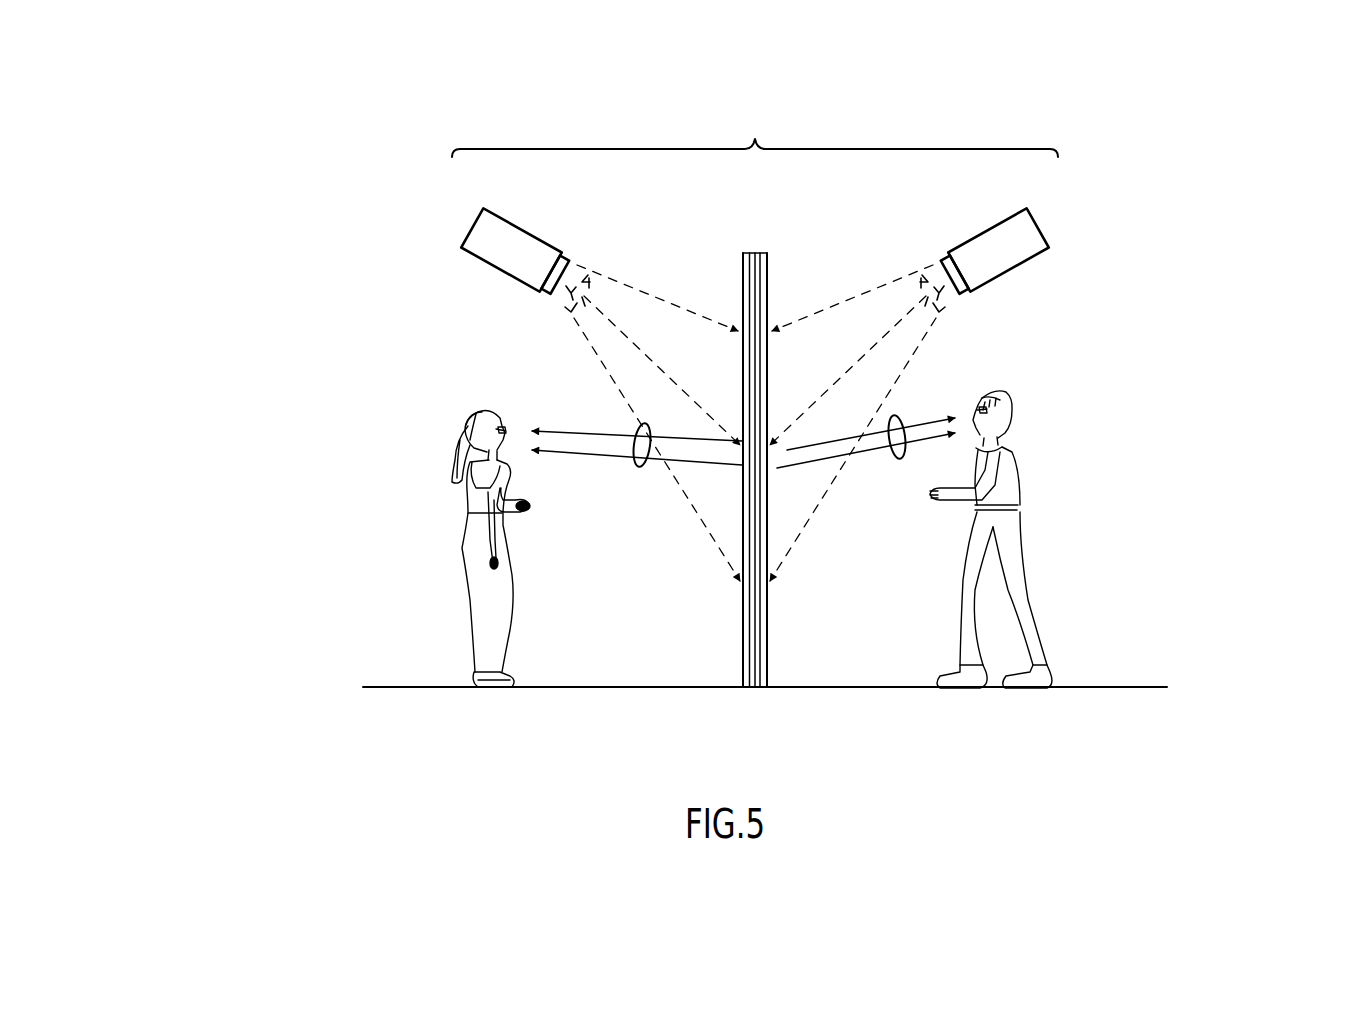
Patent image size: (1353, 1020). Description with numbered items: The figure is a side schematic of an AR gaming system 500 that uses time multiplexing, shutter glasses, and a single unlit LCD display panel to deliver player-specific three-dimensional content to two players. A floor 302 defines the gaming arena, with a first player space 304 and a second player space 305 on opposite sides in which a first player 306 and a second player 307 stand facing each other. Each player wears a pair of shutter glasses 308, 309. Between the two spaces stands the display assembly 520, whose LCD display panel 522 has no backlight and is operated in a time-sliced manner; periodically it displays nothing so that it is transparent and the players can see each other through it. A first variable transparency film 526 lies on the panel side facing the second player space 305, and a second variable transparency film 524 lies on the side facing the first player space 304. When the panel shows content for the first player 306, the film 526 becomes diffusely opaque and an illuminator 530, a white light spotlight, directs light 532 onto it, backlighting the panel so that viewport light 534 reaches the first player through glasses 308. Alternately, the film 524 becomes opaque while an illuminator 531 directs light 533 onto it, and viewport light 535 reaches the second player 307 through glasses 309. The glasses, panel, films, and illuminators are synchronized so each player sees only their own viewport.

The AR gaming system 500 is at (205, 98).
The illuminator 530 is at (473, 216).
The illuminator 531 is at (1041, 212).
The 3D display assembly 520 is at (755, 139).
The first variable transparency film 526 is at (745, 253).
The second variable transparency film 524 is at (767, 253).
The LCD display panel 522 is at (755, 692).
The light 532 is at (566, 307).
The light 533 is at (945, 307).
The second player space 305 is at (406, 349).
The first player space 304 is at (1158, 336).
The 3D shutter glasses 309 is at (502, 393).
The 3D shutter glasses 308 is at (996, 371).
The second player 307 is at (447, 520).
The first player 306 is at (1042, 508).
The light/3D content 535 is at (638, 467).
The light/3D content 534 is at (896, 459).
The floor 302 is at (1083, 692).